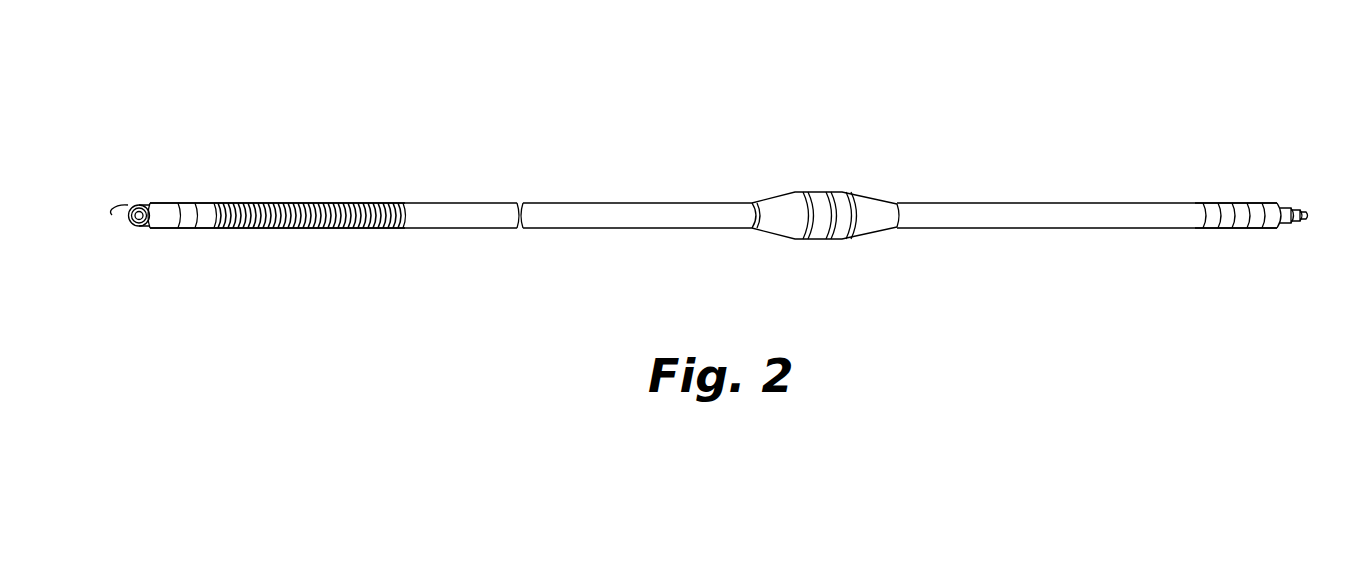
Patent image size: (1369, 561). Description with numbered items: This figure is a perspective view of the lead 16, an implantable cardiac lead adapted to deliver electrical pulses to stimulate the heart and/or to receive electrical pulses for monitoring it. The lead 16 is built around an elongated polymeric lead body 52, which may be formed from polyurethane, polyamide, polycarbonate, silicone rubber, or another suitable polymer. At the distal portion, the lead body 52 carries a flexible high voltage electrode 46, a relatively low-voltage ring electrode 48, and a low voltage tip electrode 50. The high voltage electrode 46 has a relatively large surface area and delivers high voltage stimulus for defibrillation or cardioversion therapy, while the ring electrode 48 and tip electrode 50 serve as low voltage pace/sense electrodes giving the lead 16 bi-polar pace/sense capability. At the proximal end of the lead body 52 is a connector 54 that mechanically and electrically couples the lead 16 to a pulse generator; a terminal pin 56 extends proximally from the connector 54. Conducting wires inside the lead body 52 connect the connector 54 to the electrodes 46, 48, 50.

The lead 16 is at (222, 95).
The high voltage electrode 46 is at (358, 230).
The ring electrode 48 is at (184, 230).
The tip electrode 50 is at (124, 204).
The lead body 52 is at (677, 201).
The connector 54 is at (1247, 230).
The terminal pin 56 is at (1310, 216).